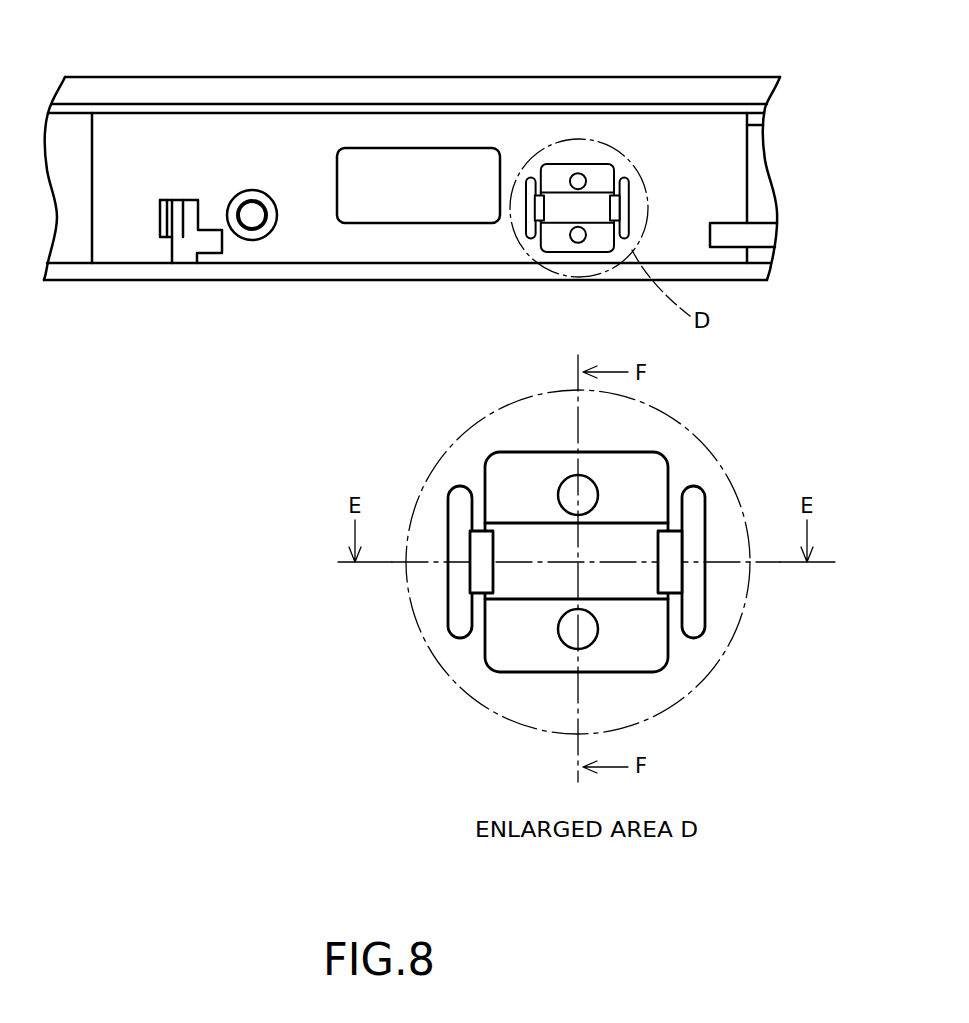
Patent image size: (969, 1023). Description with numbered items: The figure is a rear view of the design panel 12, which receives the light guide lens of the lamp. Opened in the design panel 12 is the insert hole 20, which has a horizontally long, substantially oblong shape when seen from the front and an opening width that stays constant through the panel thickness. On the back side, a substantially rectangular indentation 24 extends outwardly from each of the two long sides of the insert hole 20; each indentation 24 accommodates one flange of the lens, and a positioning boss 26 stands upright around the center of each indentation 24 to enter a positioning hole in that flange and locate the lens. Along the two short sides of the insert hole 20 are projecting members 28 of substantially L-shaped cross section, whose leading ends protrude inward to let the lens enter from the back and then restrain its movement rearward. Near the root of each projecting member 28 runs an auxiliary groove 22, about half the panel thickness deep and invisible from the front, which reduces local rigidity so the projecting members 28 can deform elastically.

The design panel 12 is at (528, 123).
The insert hole 20 is at (612, 537).
The auxiliary groove 22 is at (693, 502).
The indentation 24 is at (513, 472).
The positioning boss 26 is at (568, 478).
The projecting member 28 is at (458, 497).